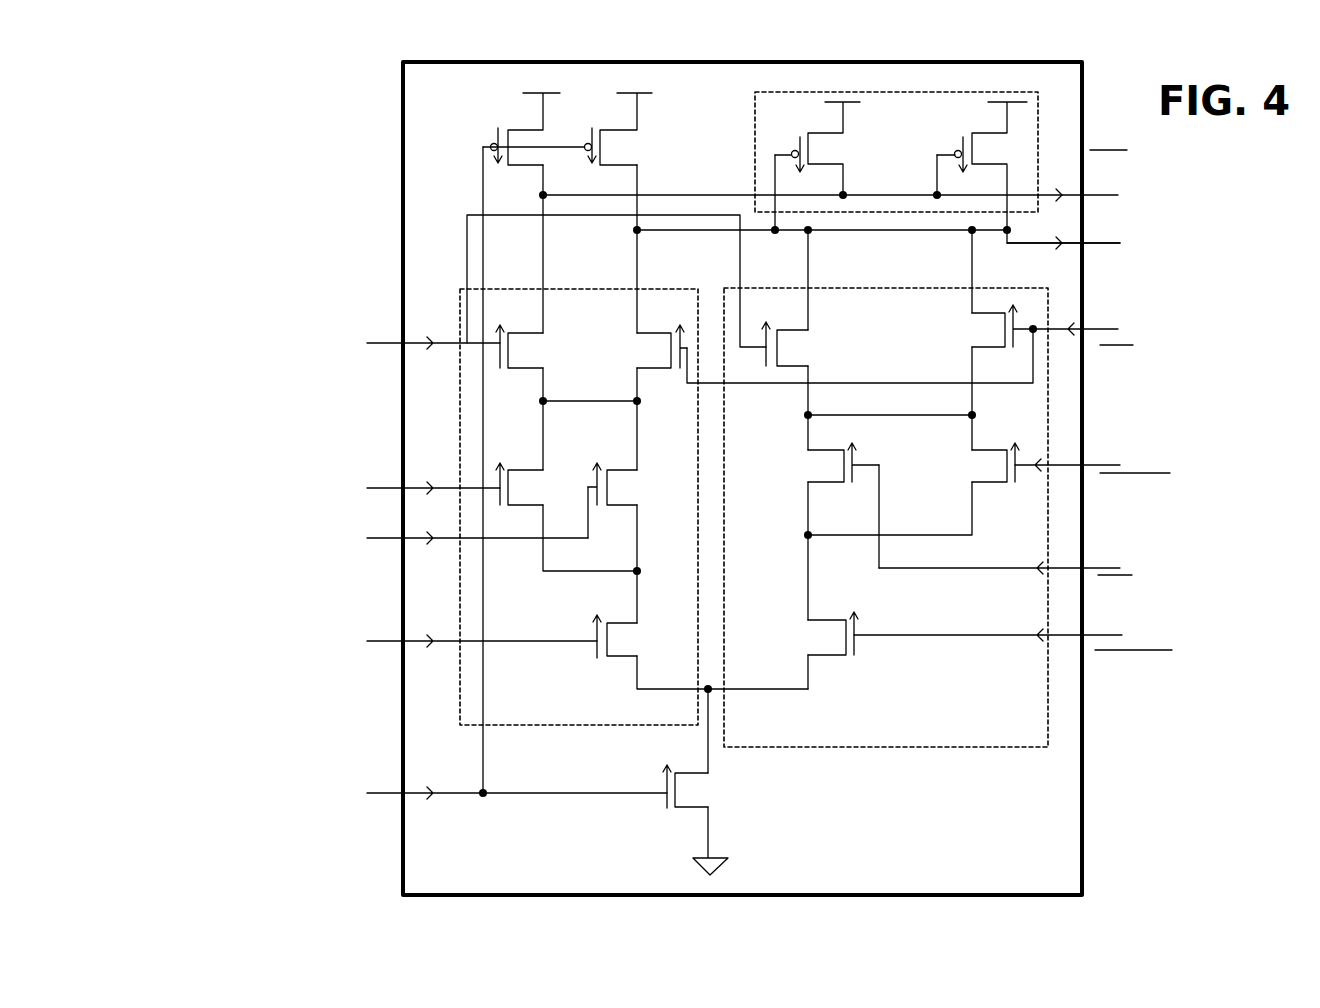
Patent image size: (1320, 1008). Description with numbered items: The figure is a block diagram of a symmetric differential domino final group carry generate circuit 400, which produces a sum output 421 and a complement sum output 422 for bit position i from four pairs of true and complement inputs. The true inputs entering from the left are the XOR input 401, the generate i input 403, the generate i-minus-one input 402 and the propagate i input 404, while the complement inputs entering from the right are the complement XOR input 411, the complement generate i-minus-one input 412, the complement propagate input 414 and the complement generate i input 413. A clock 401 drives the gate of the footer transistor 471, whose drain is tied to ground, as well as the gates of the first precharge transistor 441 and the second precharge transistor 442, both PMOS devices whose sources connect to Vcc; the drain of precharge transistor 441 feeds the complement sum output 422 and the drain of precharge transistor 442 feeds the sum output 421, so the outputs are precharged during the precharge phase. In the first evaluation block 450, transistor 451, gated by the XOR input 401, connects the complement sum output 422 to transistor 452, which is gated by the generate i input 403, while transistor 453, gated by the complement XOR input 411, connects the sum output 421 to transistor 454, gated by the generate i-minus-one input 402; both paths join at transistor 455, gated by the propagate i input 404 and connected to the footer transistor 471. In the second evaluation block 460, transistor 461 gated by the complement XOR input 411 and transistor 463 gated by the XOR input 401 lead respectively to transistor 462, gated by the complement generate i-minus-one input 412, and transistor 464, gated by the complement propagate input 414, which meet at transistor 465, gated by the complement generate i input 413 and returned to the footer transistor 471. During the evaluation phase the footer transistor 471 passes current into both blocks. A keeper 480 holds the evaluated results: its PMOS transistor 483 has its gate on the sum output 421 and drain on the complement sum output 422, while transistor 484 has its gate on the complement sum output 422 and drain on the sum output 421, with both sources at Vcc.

The final group carry generate circuit 400 is at (581, 478).
The XOR input / clock 401 is at (508, 566).
The generate i-1 input 402 is at (449, 561).
The generate i input 403 is at (412, 466).
The propagate i input 404 is at (477, 662).
The complement XOR i input 411 is at (1083, 351).
The complement generate i-1 input 412 is at (1096, 485).
The complement generate i input 413 is at (1013, 657).
The complement propagate i input 414 is at (1009, 585).
The sum output 421 is at (1067, 260).
The complement sum output 422 is at (1107, 170).
The first precharge transistor 441 is at (513, 123).
The second precharge transistor 442 is at (649, 134).
The first evaluation block 450 is at (698, 725).
The transistor 451 is at (535, 346).
The transistor 452 is at (519, 469).
The transistor 453 is at (651, 346).
The transistor 454 is at (628, 482).
The transistor 455 is at (597, 624).
The second evaluation block 460 is at (762, 747).
The transistor 461 is at (982, 322).
The transistor 462 is at (977, 463).
The transistor 463 is at (804, 344).
The transistor 464 is at (820, 463).
The transistor 465 is at (815, 633).
The footer transistor 471 is at (706, 786).
The keeper 480 is at (896, 140).
The keeper transistor 483 is at (828, 148).
The keeper transistor 484 is at (978, 137).